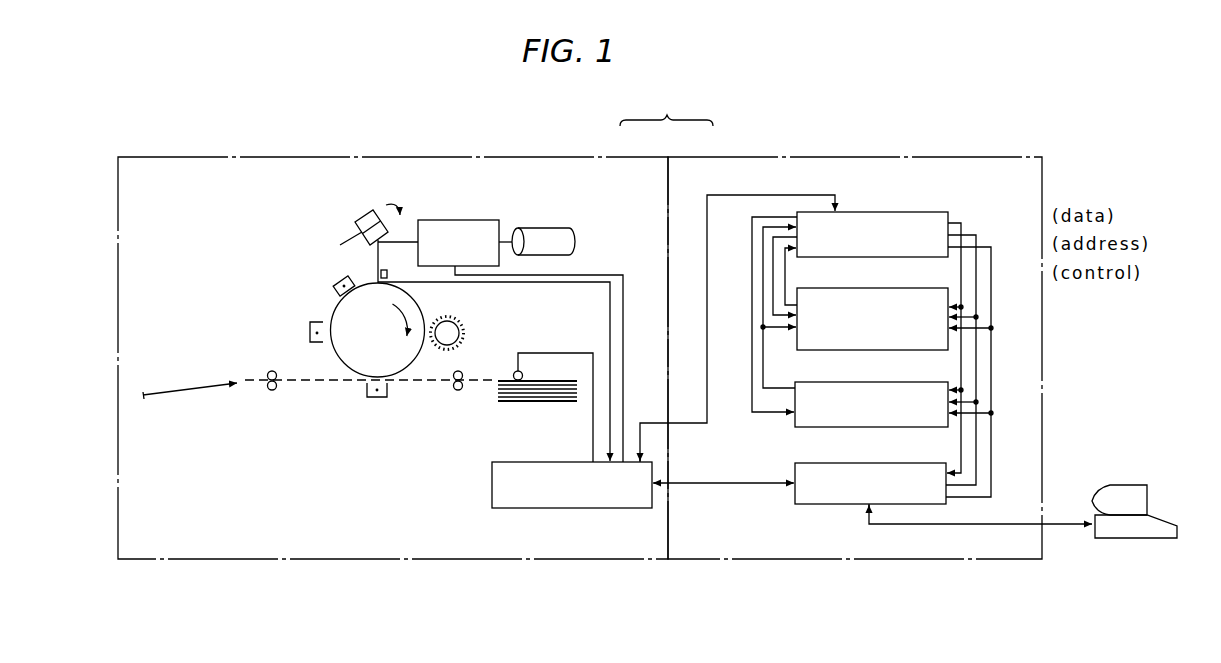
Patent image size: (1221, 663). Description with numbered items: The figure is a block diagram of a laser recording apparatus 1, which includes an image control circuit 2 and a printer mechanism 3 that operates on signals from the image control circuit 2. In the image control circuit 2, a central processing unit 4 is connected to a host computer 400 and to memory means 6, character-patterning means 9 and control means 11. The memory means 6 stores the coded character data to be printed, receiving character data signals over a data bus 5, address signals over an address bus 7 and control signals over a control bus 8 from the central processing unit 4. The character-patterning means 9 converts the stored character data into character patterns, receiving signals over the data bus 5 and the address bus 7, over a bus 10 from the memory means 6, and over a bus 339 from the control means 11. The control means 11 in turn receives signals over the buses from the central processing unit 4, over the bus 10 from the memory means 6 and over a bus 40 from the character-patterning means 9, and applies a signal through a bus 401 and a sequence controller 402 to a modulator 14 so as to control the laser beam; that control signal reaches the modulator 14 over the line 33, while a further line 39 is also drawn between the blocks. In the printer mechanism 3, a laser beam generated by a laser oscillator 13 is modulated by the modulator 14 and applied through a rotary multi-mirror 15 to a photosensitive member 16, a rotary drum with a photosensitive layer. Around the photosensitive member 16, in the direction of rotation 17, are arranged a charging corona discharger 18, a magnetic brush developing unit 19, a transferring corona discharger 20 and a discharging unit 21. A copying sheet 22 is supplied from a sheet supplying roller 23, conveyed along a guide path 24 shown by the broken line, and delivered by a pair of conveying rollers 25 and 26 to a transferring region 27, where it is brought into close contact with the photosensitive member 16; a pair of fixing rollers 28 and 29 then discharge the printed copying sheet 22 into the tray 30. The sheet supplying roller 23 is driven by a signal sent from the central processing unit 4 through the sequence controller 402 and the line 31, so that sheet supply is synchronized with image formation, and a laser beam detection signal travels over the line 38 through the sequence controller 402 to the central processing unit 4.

The laser recording apparatus 1 is at (666, 107).
The image control circuit 2 is at (728, 158).
The printer mechanism 3 is at (603, 157).
The central processing unit 4 is at (917, 451).
The data bus 5 is at (963, 225).
The memory means 6 is at (913, 382).
The address bus 7 is at (978, 238).
The control bus 8 is at (992, 268).
The character-patterning means 9 is at (913, 289).
The bus 10 is at (763, 368).
The control means 11 is at (905, 212).
The laser oscillator 13 is at (543, 220).
The modulator 14 is at (460, 220).
The rotary multi-mirror 15 is at (360, 217).
The photosensitive member 16 is at (336, 306).
The direction of rotation 17 is at (398, 325).
The charging corona discharger 18 is at (338, 276).
The magnetic brush developing unit 19 is at (453, 326).
The transferring corona discharger 20 is at (377, 398).
The discharging unit 21 is at (310, 331).
The copying sheet 22 is at (548, 380).
The sheet supplying roller 23 is at (515, 369).
The guide path 24 is at (311, 382).
The conveying roller 25 is at (462, 371).
The conveying roller 26 is at (458, 391).
The transferring region 27 is at (395, 385).
The fixing roller 28 is at (268, 371).
The fixing roller 29 is at (272, 391).
The tray 30 is at (189, 391).
The line 31 is at (593, 436).
The line 33 is at (587, 275).
The line 38 is at (610, 318).
The signal line 39 is at (751, 352).
The bus 40 is at (787, 270).
The bus 339 is at (773, 283).
The host computer 400 is at (1125, 485).
The bus 401 is at (773, 194).
The sequence controller 402 is at (532, 462).